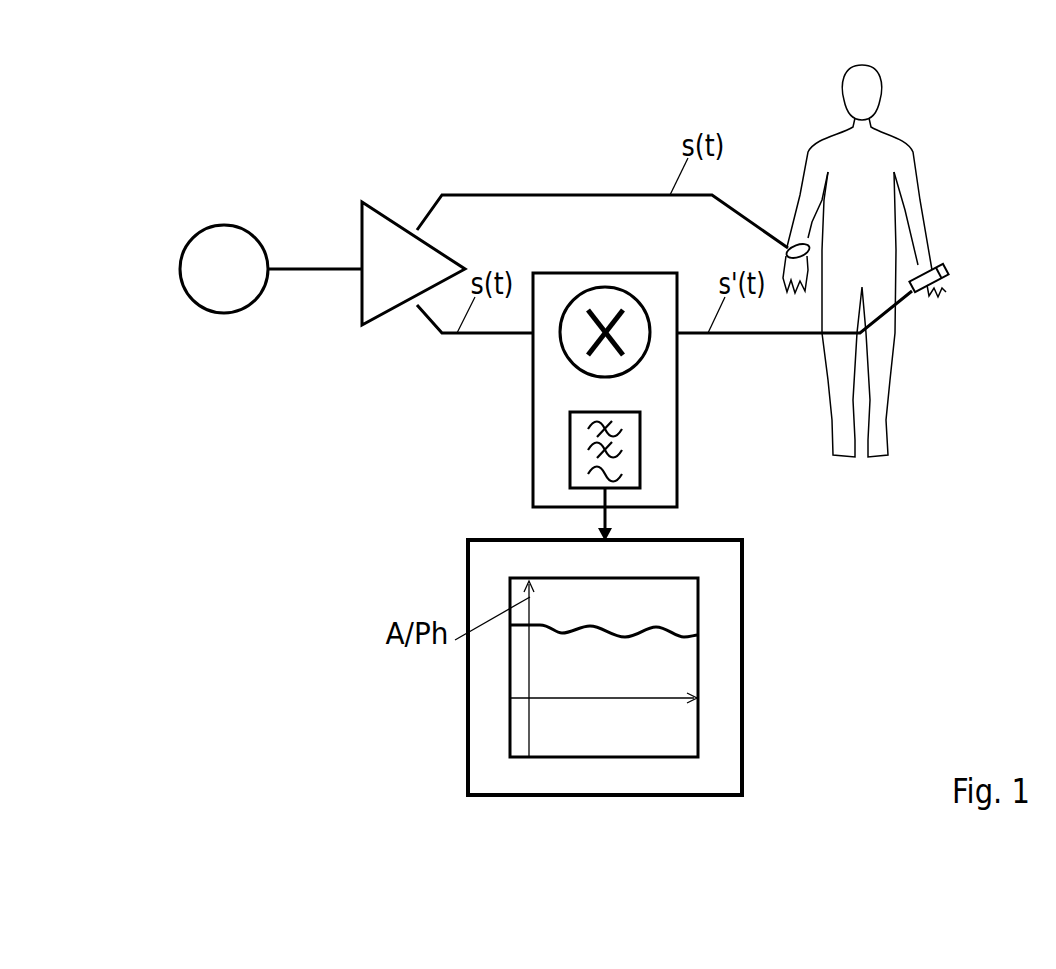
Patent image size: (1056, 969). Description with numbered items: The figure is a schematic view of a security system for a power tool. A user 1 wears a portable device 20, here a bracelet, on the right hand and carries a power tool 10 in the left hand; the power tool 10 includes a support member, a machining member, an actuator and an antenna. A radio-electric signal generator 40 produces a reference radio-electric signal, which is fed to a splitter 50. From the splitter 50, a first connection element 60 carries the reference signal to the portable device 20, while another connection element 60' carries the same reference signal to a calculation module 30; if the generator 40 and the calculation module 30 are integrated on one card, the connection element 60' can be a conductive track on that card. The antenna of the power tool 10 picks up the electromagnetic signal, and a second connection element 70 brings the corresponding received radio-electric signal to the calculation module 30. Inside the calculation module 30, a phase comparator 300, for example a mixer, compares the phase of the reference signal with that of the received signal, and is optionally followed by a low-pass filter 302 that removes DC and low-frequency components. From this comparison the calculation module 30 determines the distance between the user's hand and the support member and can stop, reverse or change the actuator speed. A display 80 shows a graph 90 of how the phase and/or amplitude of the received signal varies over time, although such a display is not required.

The user 1 is at (863, 78).
The power tool 10 is at (943, 282).
The portable device 20 is at (790, 240).
The calculation module 30 is at (677, 500).
The radio-electric signal generator 40 is at (225, 223).
The splitter 50 is at (375, 208).
The first connection element 60 is at (602, 185).
The connection element 60' is at (475, 355).
The second connection element 70 is at (777, 333).
The display 80 is at (742, 615).
The graph 90 is at (588, 625).
The phase comparator 300 is at (603, 287).
The low-pass filter 302 is at (640, 465).